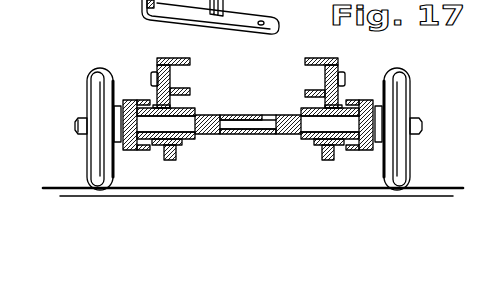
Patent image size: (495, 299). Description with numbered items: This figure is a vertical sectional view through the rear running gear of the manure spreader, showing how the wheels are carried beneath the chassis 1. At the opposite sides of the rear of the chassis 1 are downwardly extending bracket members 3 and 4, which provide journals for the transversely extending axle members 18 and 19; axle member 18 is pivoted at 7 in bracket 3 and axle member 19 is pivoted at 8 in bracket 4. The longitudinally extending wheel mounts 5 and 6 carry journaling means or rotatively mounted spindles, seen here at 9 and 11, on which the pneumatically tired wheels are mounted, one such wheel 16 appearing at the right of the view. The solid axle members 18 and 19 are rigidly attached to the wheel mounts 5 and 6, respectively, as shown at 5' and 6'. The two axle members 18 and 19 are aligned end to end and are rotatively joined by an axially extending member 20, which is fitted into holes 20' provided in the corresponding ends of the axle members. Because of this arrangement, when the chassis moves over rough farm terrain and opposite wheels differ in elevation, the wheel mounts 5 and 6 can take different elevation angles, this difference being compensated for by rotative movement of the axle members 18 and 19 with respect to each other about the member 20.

The chassis 1 is at (185, 61).
The bracket member 3 is at (161, 61).
The bracket member 4 is at (338, 67).
The wheel mount 5 is at (131, 98).
The rigid attachment of axle member to wheel mount 5' is at (138, 163).
The wheel mount 6 is at (359, 111).
The rigid attachment of axle member to wheel mount 6' is at (353, 165).
The pivot 7 is at (164, 134).
The pivot 8 is at (317, 134).
The journaling means or spindle 9 is at (80, 124).
The journaling means or spindle 11 is at (90, 84).
The pneumatically tired wheel 16 is at (412, 93).
The axle member 18 is at (209, 112).
The axle member 19 is at (277, 149).
The axially extending member 20 is at (248, 98).
The holes 20' is at (242, 154).